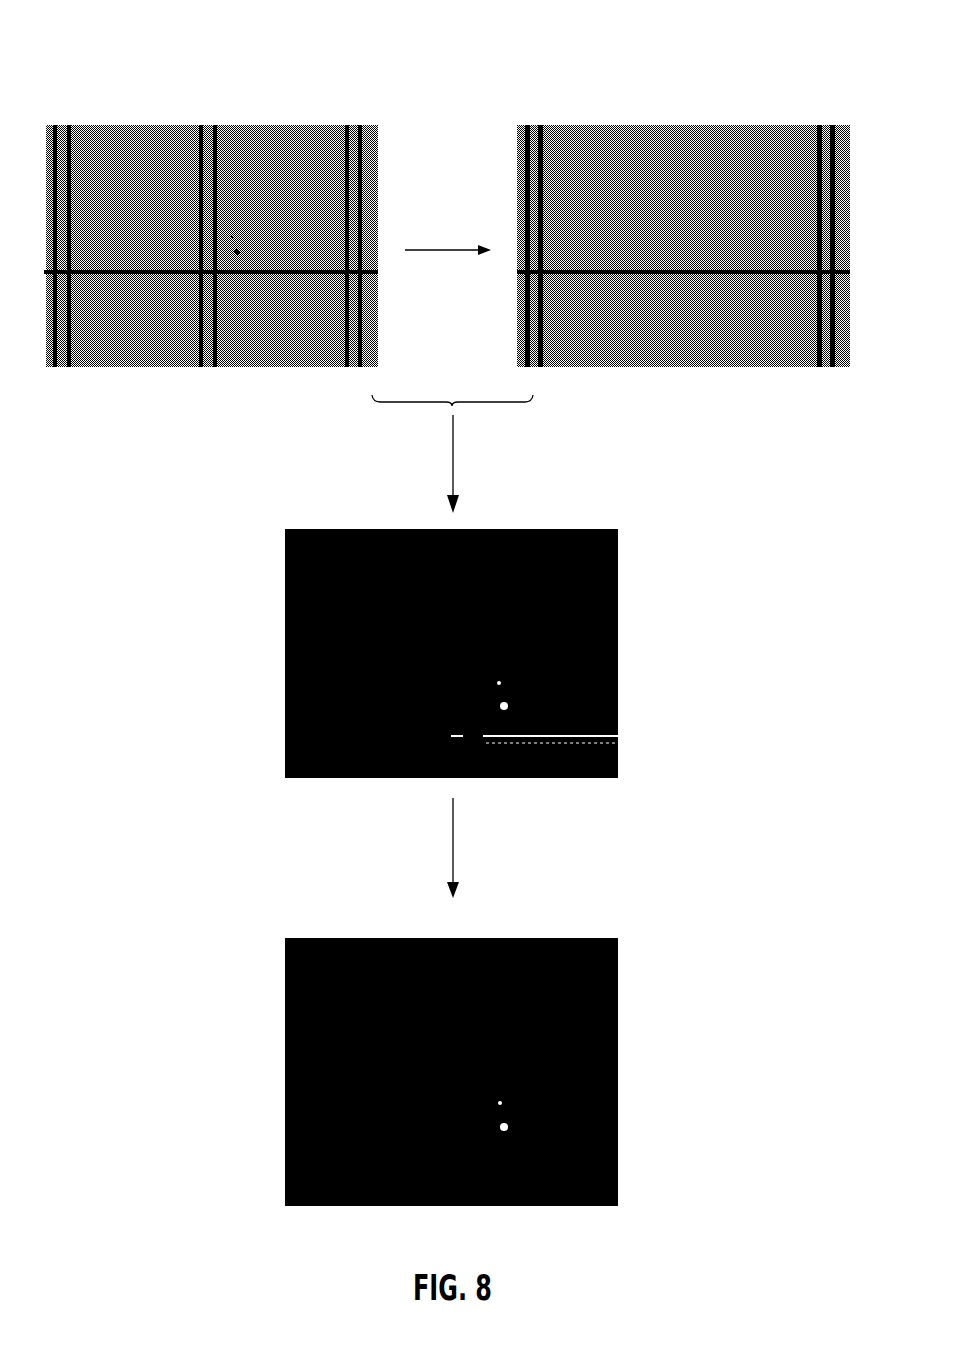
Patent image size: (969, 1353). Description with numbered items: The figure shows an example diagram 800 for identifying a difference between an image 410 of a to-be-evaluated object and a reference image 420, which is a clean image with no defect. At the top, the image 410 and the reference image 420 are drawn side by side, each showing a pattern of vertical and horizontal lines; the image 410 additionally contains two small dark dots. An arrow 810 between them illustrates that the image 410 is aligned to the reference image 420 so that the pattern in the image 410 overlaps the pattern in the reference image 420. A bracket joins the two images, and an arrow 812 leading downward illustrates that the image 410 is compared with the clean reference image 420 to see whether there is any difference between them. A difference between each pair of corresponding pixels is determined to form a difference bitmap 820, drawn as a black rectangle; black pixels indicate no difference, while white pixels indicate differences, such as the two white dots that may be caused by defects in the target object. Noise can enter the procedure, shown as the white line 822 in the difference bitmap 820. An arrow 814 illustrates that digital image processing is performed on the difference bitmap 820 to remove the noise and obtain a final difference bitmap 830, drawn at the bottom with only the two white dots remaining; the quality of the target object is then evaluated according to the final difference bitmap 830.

The image processing flow 800 is at (224, 26).
The image 410 is at (295, 125).
The reference image 420 is at (767, 125).
The arrow 810 is at (433, 250).
The arrow 812 is at (453, 457).
The difference bitmap 820 is at (487, 639).
The white line 822 is at (618, 736).
The arrow 814 is at (453, 845).
The final difference bitmap 830 is at (545, 938).